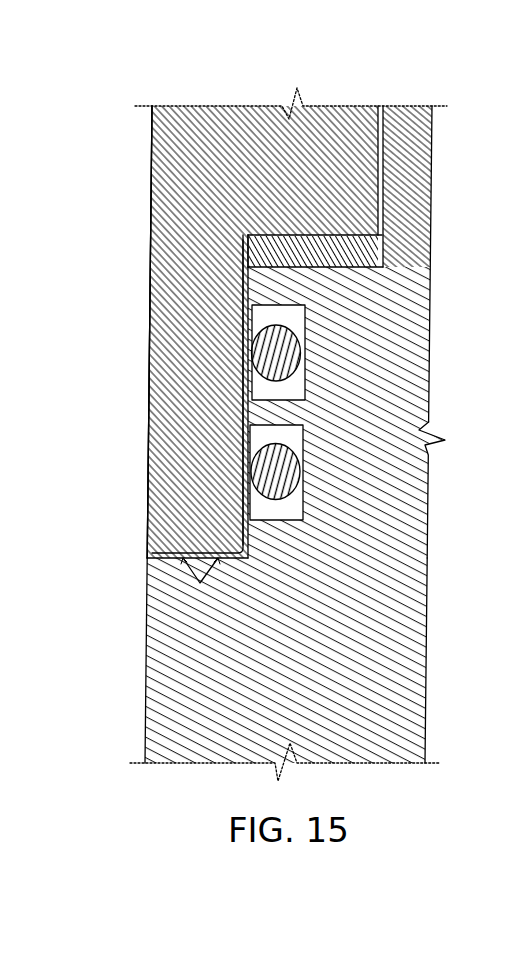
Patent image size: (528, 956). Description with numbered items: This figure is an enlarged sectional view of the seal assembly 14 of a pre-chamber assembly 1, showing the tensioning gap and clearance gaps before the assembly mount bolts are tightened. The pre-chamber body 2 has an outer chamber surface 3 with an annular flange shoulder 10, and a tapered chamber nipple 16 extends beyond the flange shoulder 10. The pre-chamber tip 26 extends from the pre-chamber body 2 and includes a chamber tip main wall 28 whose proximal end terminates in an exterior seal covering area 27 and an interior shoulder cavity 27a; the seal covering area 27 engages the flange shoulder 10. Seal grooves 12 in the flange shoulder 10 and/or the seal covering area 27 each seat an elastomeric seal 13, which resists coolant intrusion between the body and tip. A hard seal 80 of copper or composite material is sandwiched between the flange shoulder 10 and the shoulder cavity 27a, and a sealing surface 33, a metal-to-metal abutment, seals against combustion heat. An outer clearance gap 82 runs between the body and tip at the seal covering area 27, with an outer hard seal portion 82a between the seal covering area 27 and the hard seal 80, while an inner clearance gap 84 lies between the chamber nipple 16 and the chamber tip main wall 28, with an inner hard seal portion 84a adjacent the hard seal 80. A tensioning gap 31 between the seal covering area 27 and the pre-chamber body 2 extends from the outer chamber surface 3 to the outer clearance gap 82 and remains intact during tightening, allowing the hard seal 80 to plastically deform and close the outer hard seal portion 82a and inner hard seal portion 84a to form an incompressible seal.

The pre-chamber assembly 1 is at (157, 75).
The pre-chamber body 2 is at (142, 662).
The outer chamber surface 3 is at (146, 603).
The flange shoulder 10 is at (313, 263).
The seal groove 12 is at (296, 307).
The elastomeric seal 13 is at (289, 355).
The seal assembly 14 is at (128, 487).
The chamber nipple 16 is at (413, 123).
The pre-chamber tip 26 is at (147, 352).
The seal covering area 27 is at (168, 427).
The shoulder cavity 27a is at (352, 237).
The chamber tip main wall 28 is at (173, 147).
The tensioning gap 31 is at (163, 559).
The sealing surface 33 is at (248, 293).
The hard seal 80 is at (292, 248).
The outer clearance gap 82 is at (241, 385).
The outer hard seal portion 82a is at (245, 248).
The inner clearance gap 84 is at (390, 170).
The inner hard seal portion 84a is at (387, 251).